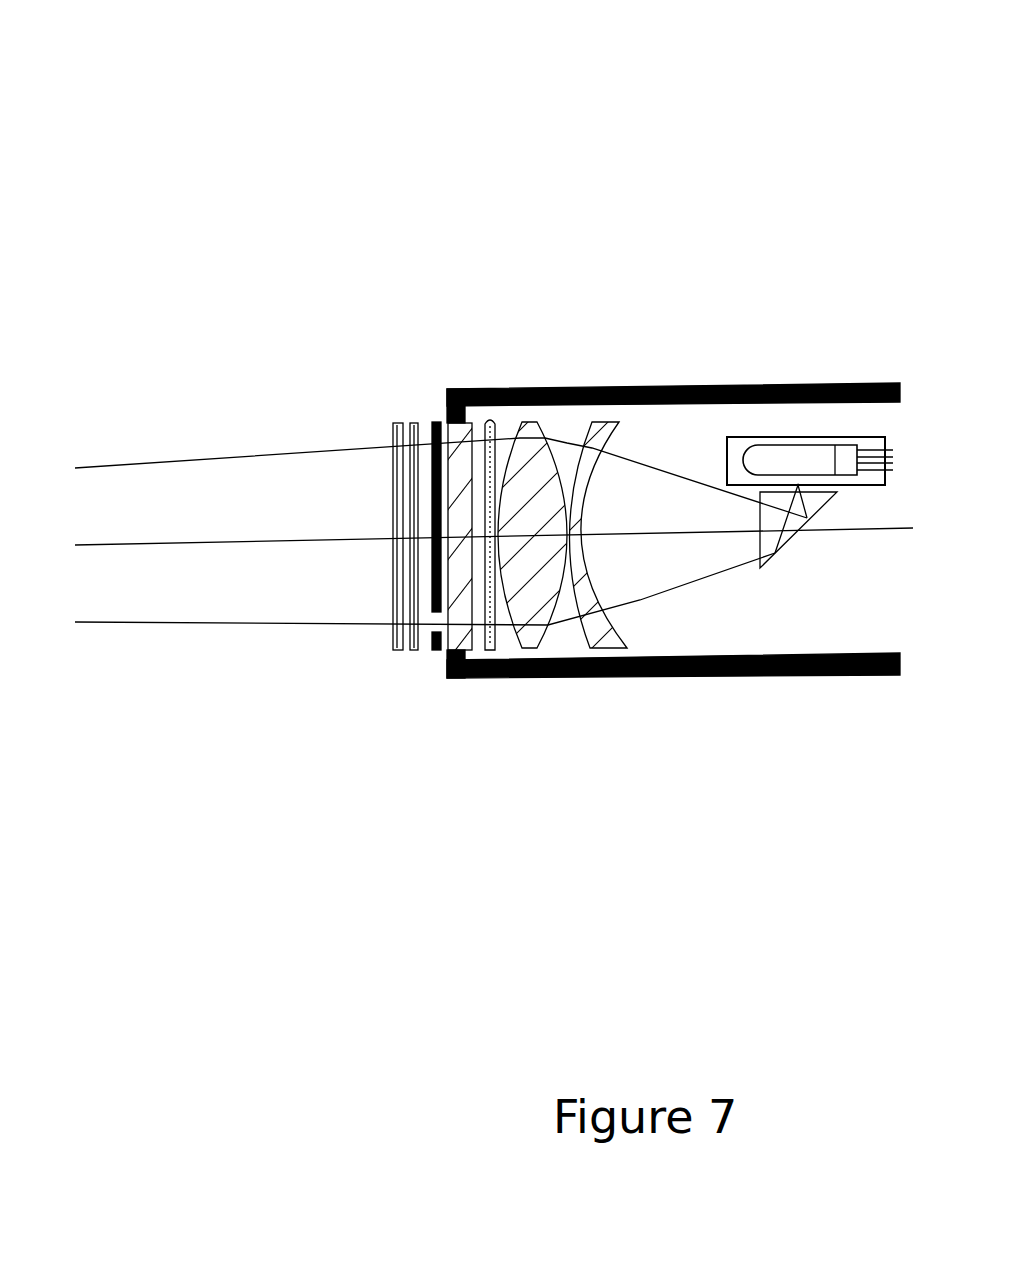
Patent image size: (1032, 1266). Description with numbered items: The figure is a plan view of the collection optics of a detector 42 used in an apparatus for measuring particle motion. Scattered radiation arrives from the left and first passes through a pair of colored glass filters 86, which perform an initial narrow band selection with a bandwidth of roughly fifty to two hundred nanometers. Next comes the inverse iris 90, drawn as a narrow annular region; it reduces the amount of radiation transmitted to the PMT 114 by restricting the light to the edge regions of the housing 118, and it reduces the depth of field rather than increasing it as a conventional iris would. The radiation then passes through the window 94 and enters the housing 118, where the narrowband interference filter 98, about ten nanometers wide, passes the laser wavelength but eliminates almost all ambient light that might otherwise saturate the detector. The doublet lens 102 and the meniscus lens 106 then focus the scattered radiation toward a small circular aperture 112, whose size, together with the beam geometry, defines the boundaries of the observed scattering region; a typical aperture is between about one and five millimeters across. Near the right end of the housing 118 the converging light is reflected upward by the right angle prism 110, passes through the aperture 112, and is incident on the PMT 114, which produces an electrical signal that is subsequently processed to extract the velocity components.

The detector 42 is at (572, 200).
The pair of colored glass filters 86 is at (425, 658).
The inverse iris 90 is at (435, 422).
The window 94 is at (448, 670).
The interference filter 98 is at (492, 415).
The doublet lens 102 is at (532, 650).
The meniscus lens 106 is at (603, 420).
The right angle prism 110 is at (787, 545).
The aperture 112 is at (847, 485).
The PMT 114 is at (788, 455).
The housing 118 is at (733, 387).